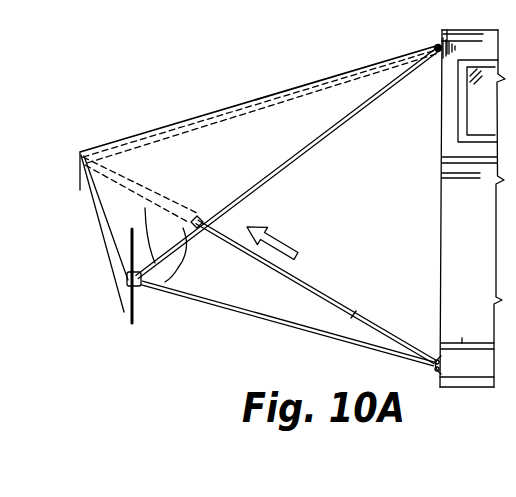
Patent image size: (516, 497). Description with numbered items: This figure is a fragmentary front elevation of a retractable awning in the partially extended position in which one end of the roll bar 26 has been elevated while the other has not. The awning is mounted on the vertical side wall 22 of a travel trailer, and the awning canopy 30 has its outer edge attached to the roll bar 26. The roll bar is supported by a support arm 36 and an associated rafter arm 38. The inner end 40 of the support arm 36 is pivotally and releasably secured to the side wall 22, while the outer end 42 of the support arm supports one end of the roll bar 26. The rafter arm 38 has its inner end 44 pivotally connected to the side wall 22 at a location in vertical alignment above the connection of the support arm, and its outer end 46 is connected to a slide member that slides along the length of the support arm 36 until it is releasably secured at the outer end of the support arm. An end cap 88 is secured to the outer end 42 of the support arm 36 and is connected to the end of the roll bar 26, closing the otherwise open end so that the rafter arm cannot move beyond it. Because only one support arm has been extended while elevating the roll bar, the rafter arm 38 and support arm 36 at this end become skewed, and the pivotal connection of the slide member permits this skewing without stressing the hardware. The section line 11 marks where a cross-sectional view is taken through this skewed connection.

The section line 11- 11 is at (118, 239).
The side wall 22 is at (442, 103).
The roll bar 26 is at (127, 282).
The awning canopy 30 is at (288, 107).
The support arm 36 is at (298, 277).
The rafter arm 38 is at (218, 105).
The inner end of support arm 40 is at (433, 364).
The outer end of support arm 42 is at (148, 290).
The inner end of rafter arm 44 is at (435, 46).
The outer end of rafter arm 46 is at (134, 227).
The end cap 88 is at (183, 228).